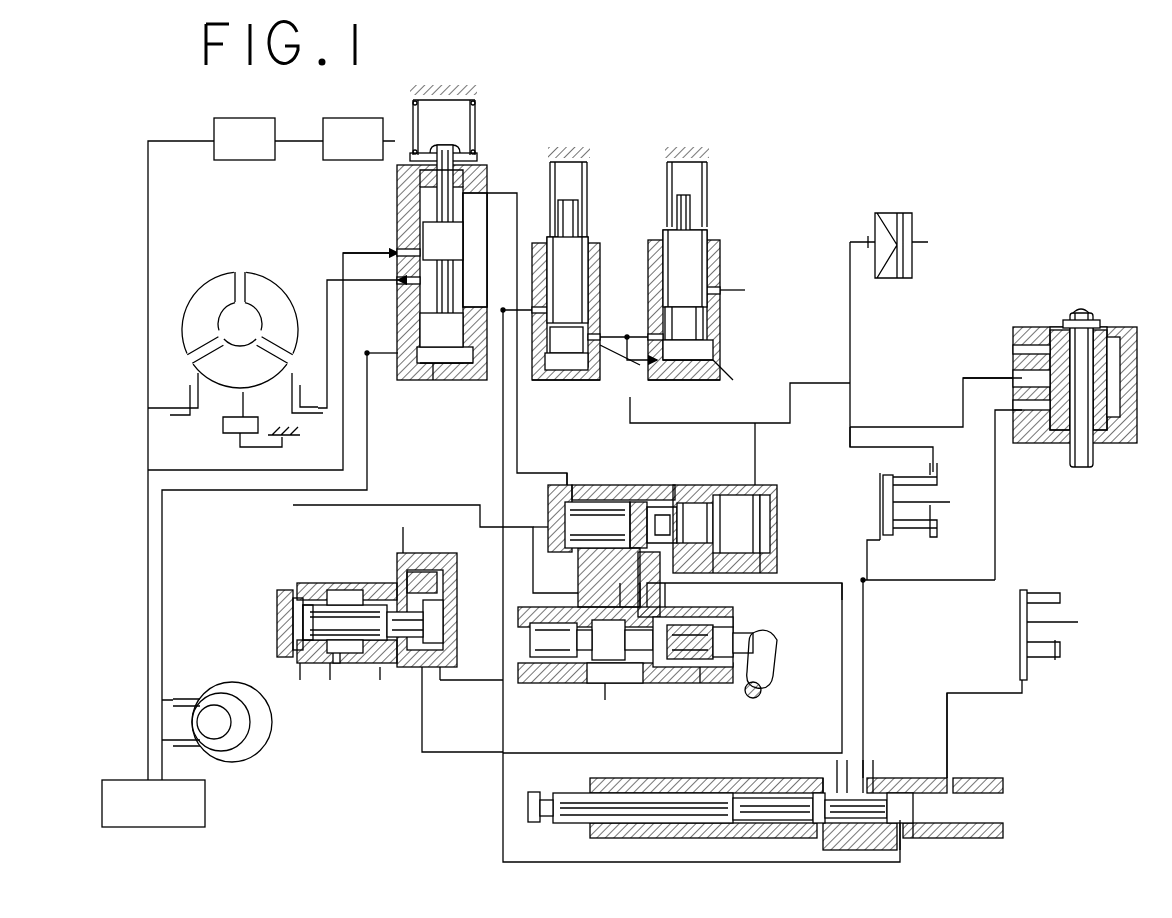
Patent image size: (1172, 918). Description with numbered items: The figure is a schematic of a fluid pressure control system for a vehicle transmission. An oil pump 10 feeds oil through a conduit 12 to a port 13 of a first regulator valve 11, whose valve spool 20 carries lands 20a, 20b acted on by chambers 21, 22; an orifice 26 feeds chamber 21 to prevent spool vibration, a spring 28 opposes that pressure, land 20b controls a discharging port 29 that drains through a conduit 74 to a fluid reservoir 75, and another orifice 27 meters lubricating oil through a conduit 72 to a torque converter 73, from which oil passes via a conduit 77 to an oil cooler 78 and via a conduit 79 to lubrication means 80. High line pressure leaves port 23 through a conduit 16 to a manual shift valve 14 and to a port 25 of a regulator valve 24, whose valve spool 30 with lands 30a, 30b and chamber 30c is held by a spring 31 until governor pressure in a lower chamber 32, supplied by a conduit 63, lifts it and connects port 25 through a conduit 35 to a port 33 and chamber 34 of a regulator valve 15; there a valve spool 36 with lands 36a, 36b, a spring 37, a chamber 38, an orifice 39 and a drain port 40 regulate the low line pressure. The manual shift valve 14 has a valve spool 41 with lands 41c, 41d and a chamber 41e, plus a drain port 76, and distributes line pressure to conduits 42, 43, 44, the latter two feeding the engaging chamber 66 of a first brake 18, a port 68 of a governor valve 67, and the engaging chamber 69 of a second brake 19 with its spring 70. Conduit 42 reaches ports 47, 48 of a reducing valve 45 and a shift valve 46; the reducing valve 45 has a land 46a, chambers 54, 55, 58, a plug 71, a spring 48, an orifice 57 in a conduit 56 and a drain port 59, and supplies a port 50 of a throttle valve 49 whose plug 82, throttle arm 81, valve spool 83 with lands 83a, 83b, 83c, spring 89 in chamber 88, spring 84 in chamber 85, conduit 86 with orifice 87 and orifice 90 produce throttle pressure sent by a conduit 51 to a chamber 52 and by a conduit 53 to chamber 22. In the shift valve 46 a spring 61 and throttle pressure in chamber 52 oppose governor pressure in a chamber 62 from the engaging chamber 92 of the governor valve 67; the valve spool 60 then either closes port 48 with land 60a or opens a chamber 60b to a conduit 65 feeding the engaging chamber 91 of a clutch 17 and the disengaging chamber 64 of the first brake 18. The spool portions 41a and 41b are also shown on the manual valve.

The oil pump 10 is at (214, 678).
The first regulator valve 11 is at (433, 269).
The conduit 12 is at (162, 554).
The port 13 is at (420, 364).
The manual shift valve 14 is at (788, 787).
The regulator valve 15 is at (731, 260).
The conduit 16 is at (502, 470).
The clutch 17 is at (917, 252).
The first brake 18 is at (916, 512).
The second brake 19 is at (1036, 661).
The valve spool 20 is at (449, 164).
The land 20a is at (448, 358).
The land 20b is at (430, 238).
The fluid chamber 21 is at (434, 370).
The fluid chamber 22 is at (418, 188).
The port 23 is at (478, 290).
The regulator valve 24 is at (591, 273).
The port 25 is at (520, 264).
The orifice 26 is at (396, 376).
The orifice 27 is at (396, 280).
The spring 28 is at (415, 128).
The discharging port 29 is at (394, 248).
The valve spool 30 is at (580, 222).
The land 30a is at (566, 364).
The land 30b is at (572, 262).
The chamber 30c is at (594, 354).
The spring 31 is at (588, 186).
The lower chamber 32 is at (546, 380).
The port 33 is at (708, 344).
The chamber 34 is at (715, 360).
The conduit 35 is at (627, 336).
The valve spool 36 is at (689, 224).
The land 36a is at (714, 362).
The land 36b is at (706, 246).
The spring 37 is at (708, 180).
The chamber 38 is at (700, 322).
The orifice 39 is at (650, 354).
The drain port 40 is at (746, 290).
The valve spool 41 is at (754, 787).
The spool end 41a is at (528, 808).
The spool land 41b is at (664, 826).
The land 41c is at (812, 794).
The land 41d is at (900, 794).
The chamber 41e is at (872, 766).
The conduit 42 is at (672, 664).
The conduit 43 is at (866, 650).
The conduit 44 is at (951, 692).
The reducing valve 45 is at (396, 628).
The shift valve 46 is at (382, 680).
The land 46a is at (441, 620).
The port 47 is at (424, 668).
The port 48 is at (318, 578).
The throttle valve 49 is at (842, 584).
The port 50 is at (609, 525).
The conduit 51 is at (524, 596).
The chamber 52 is at (582, 500).
The conduit 53 is at (520, 454).
The chamber 54 is at (278, 606).
The chamber 55 is at (354, 600).
The conduit 56 is at (398, 566).
The orifice 57 is at (444, 578).
The chamber 58 is at (444, 668).
The drain port 59 is at (334, 668).
The valve spool 60 is at (758, 498).
The land 60a is at (692, 423).
The chamber 60b is at (760, 506).
The spring 61 is at (620, 502).
The chamber 62 is at (770, 544).
The conduit 63 is at (676, 504).
The disengaging chamber 64 is at (920, 534).
The conduit 65 is at (824, 382).
The engaging chamber 66 is at (880, 522).
The governor valve 67 is at (1057, 420).
The port 68 is at (1044, 426).
The engaging chamber 69 is at (1019, 652).
The spring 70 is at (1052, 592).
The plug 71 is at (296, 674).
The conduit 72 is at (248, 392).
The torque converter 73 is at (226, 276).
The conduit 74 is at (186, 468).
The fluid reservoir 75 is at (208, 798).
The drain port 76 is at (808, 836).
The conduit 77 is at (148, 204).
The oil cooler 78 is at (250, 153).
The conduit 79 is at (304, 144).
The lubrication means 80 is at (351, 130).
The throttle arm 81 is at (770, 688).
The plug 82 is at (748, 654).
The valve spool 83 is at (656, 668).
The land 83a is at (586, 658).
The land 83b is at (600, 676).
The land 83c is at (700, 684).
The spring 84 is at (480, 674).
The chamber 85 is at (530, 660).
The conduit 86 is at (594, 684).
The orifice 87 is at (612, 686).
The chamber 88 is at (768, 584).
The spring 89 is at (735, 652).
The orifice 90 is at (640, 594).
The engaging chamber 91 is at (884, 278).
The engaging chamber 92 is at (1005, 370).